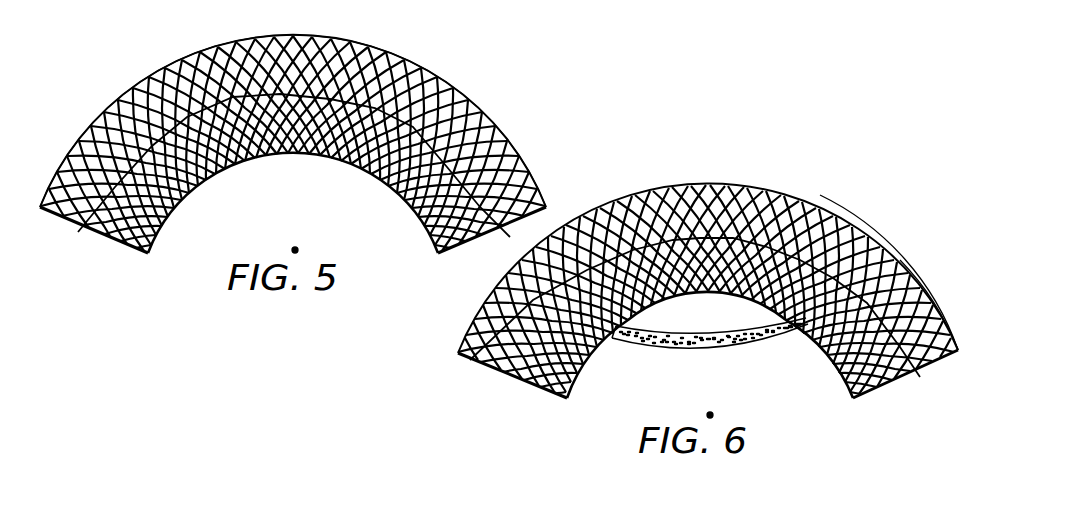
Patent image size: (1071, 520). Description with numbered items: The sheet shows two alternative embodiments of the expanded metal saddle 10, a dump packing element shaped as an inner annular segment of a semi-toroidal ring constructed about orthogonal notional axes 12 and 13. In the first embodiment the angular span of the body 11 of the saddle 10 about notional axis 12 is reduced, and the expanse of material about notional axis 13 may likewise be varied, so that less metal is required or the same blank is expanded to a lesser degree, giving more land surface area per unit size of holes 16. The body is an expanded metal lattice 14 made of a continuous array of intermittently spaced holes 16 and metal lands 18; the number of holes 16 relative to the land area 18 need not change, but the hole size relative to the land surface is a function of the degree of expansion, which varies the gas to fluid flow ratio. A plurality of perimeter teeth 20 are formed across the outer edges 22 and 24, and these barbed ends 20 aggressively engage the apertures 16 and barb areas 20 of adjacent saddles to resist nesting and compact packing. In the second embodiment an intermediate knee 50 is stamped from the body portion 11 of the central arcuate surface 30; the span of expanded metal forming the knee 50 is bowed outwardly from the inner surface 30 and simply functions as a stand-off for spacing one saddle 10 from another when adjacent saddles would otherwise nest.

In FIG. 5, the expanded metal saddle 10 is at (532, 136).
In FIG. 6, the expanded metal saddle 10 is at (816, 188).
In FIG. 5, the saddle body 11 is at (518, 182).
In FIG. 5, the notional axis 12 is at (295, 250).
In FIG. 6, the notional axis 12 is at (710, 415).
In FIG. 5, the notional axis 13 is at (77, 234).
In FIG. 6, the notional axis 13 is at (913, 372).
In FIG. 6, the expanded metal lattice 14 is at (857, 230).
In FIG. 5, the holes 16 is at (360, 57).
In FIG. 6, the holes 16 is at (673, 192).
In FIG. 5, the metal lands 18 is at (410, 64).
In FIG. 6, the metal lands 18 is at (478, 357).
In FIG. 5, the perimeter teeth 20 is at (63, 168).
In FIG. 6, the perimeter teeth 20 is at (705, 190).
In FIG. 5, the outer edge 22 is at (140, 88).
In FIG. 6, the outer edge 22 is at (938, 322).
In FIG. 6, the outer edge 24 is at (898, 262).
In FIG. 5, the central arcuate surface 30 is at (197, 194).
In FIG. 6, the central arcuate surface 30 is at (604, 348).
In FIG. 6, the intermediate knee 50 is at (731, 349).